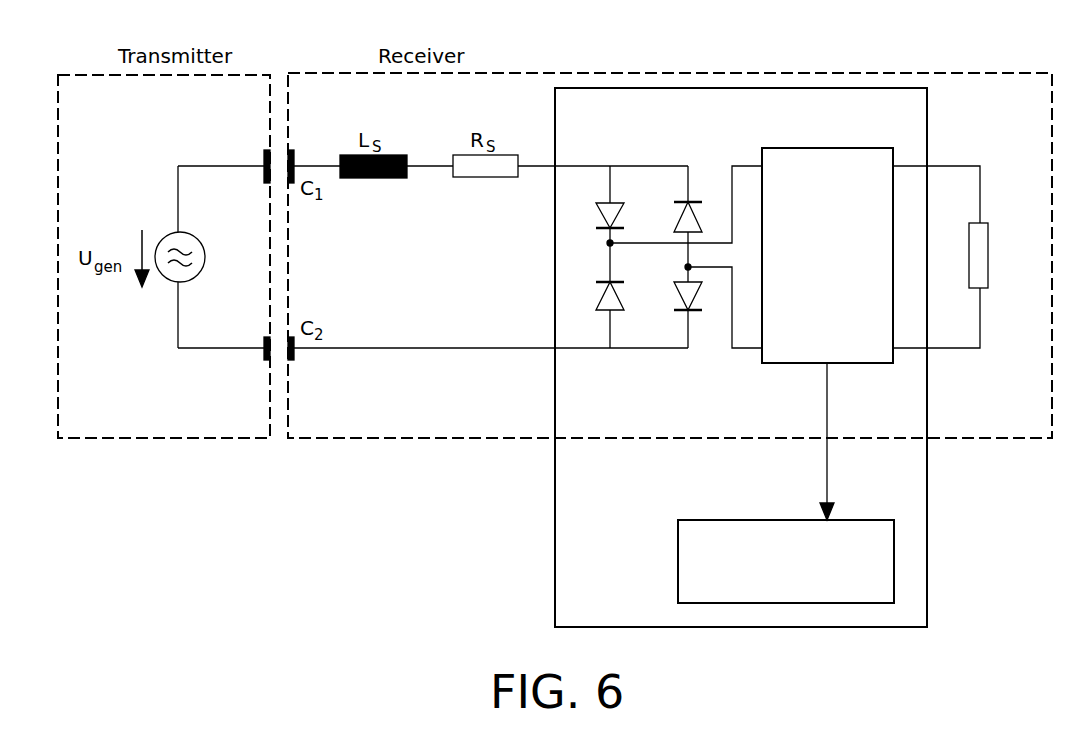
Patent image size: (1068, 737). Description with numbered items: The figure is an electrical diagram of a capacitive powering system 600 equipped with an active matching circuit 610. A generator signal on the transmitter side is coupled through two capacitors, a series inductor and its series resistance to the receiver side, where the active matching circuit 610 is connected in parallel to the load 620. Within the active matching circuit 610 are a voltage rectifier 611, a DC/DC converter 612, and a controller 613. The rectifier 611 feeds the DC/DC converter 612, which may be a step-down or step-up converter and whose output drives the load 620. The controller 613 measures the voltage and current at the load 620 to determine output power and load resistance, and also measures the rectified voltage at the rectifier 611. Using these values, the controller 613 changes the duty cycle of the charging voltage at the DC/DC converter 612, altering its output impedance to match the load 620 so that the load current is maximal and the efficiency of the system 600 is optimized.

The capacitive powering system 600 is at (995, 73).
The active matching circuit 610 is at (927, 511).
The voltage rectifier 611 is at (630, 153).
The DC/DC converter 612 is at (827, 148).
The controller 613 is at (722, 520).
The load 620 is at (990, 272).